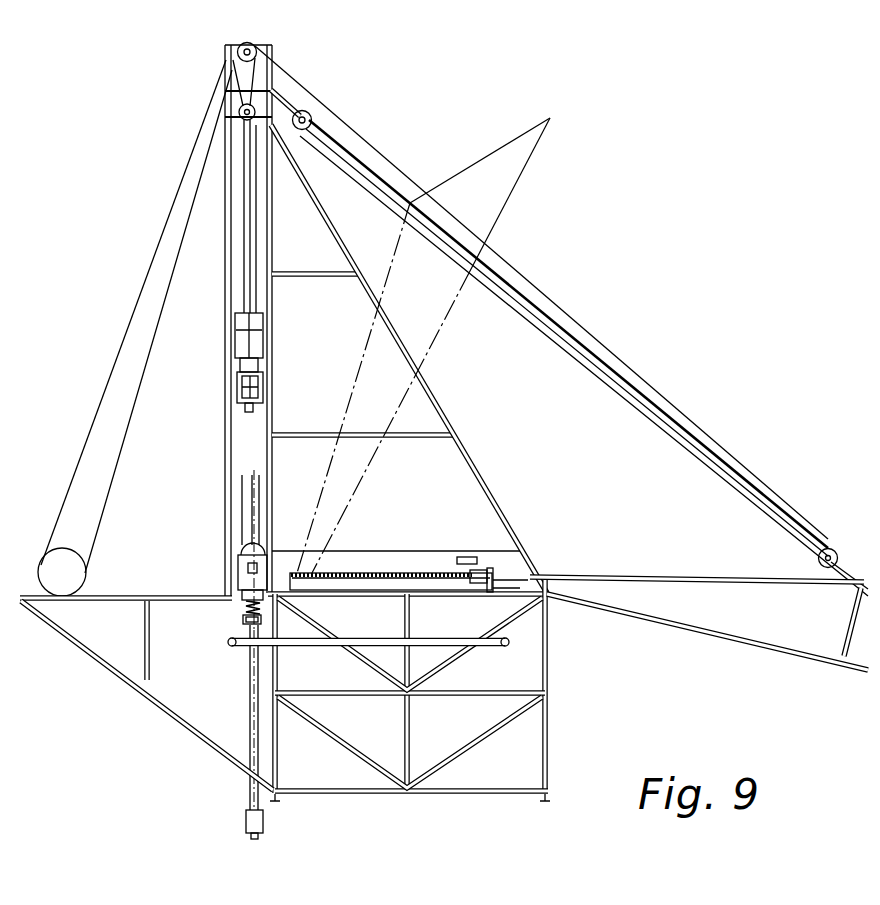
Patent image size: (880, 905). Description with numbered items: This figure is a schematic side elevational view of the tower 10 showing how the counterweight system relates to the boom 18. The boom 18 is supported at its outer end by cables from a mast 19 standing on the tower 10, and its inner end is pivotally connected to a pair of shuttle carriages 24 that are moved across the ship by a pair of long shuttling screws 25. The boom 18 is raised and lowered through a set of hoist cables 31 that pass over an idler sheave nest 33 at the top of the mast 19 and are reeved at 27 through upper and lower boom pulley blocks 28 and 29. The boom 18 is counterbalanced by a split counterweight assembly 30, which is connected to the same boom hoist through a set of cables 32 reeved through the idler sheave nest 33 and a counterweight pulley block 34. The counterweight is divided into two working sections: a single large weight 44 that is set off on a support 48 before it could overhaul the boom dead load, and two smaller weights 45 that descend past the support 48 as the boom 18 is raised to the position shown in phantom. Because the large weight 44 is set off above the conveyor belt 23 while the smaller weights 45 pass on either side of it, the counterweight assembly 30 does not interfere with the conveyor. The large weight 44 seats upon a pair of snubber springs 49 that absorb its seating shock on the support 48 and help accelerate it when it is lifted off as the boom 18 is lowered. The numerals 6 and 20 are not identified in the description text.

The roller 6 is at (36, 573).
The tower 10 is at (552, 722).
The boom 18 is at (513, 200).
The mast 19 is at (222, 290).
The support 20 is at (7, 328).
The conveyor belt 23 is at (381, 646).
The shuttle carriages 24 is at (478, 563).
The shuttling screws 25 is at (376, 572).
The reeving of hoist cables 27 is at (577, 357).
The upper boom pulley block 28 is at (310, 112).
The lower boom pulley block 29 is at (833, 552).
The split counterweight assembly 30 is at (232, 370).
The hoist cables 31 is at (403, 177).
The counterweight cables 32 is at (140, 402).
The idler sheave nest 33 is at (262, 46).
The counterweight pulley block 34 is at (239, 110).
The large weight 44 is at (232, 565).
The smaller weights 45 is at (245, 826).
The support 48 is at (240, 624).
The snubber springs 49 is at (244, 606).